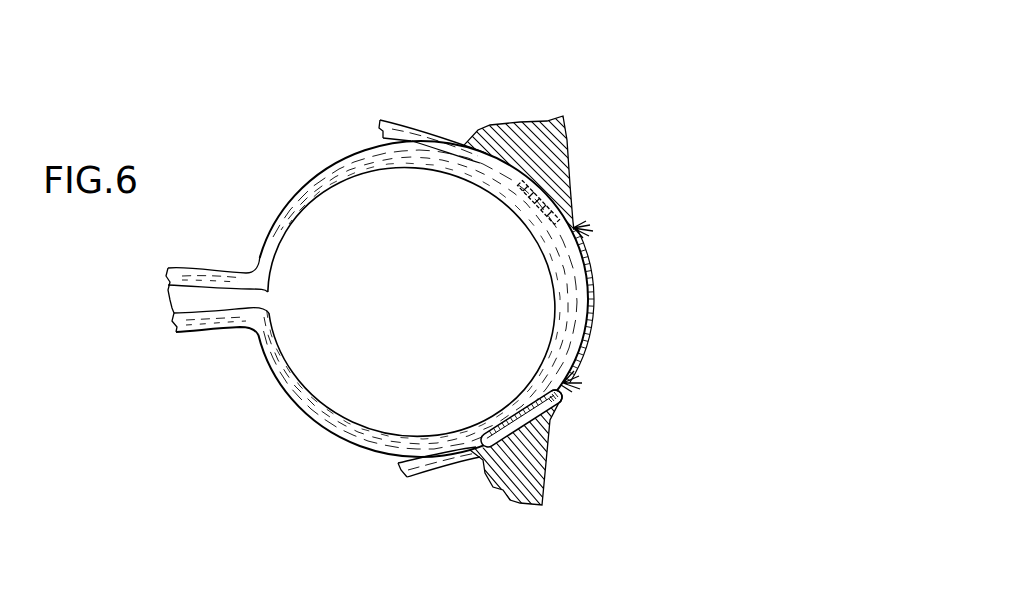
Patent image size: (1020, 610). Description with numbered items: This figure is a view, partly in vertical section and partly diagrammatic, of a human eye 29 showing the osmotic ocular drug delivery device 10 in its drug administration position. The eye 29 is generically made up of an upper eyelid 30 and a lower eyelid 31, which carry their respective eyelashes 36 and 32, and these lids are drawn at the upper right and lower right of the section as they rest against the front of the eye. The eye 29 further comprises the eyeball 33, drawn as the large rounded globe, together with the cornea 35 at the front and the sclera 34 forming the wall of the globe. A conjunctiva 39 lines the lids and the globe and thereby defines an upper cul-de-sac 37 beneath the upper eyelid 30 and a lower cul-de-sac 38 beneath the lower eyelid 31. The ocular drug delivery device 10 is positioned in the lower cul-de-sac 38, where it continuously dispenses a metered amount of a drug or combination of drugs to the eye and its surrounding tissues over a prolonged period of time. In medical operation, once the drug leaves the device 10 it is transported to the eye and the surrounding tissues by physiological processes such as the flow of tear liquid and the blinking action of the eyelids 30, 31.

The osmotic ocular drug delivery device 10 is at (548, 430).
The eye 29 is at (441, 103).
The upper eyelid 30 is at (560, 148).
The lower eyelid 31 is at (535, 478).
The eyelashes 32 is at (577, 380).
The eyeball 33 is at (318, 369).
The sclera 34 is at (322, 423).
The cornea 35 is at (580, 278).
The eyelashes 36 is at (585, 232).
The upper cul-de-sac 37 is at (558, 192).
The lower cul-de-sac 38 is at (560, 401).
The conjunctiva 39 is at (592, 320).